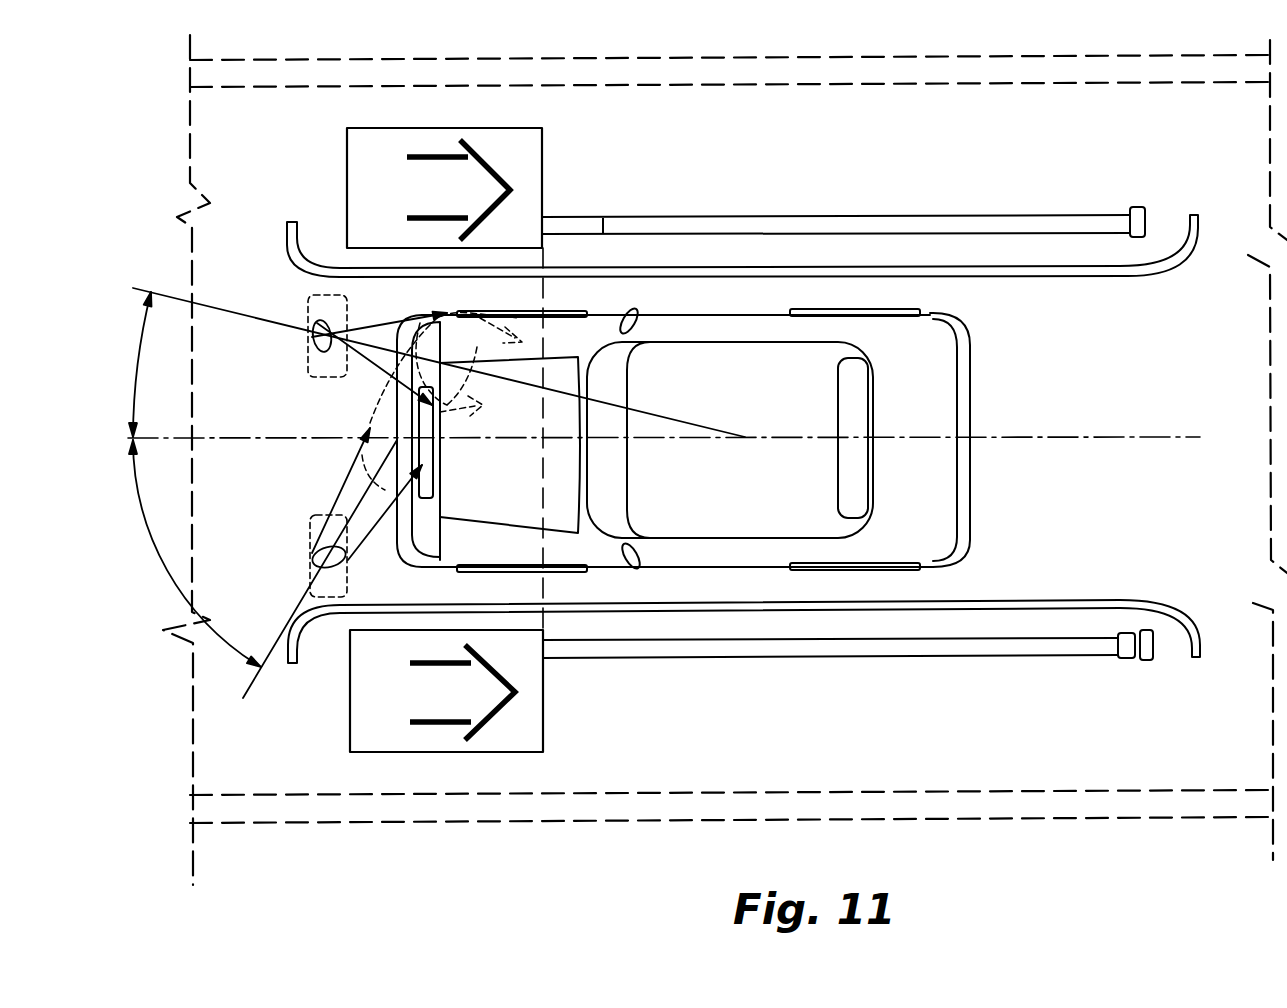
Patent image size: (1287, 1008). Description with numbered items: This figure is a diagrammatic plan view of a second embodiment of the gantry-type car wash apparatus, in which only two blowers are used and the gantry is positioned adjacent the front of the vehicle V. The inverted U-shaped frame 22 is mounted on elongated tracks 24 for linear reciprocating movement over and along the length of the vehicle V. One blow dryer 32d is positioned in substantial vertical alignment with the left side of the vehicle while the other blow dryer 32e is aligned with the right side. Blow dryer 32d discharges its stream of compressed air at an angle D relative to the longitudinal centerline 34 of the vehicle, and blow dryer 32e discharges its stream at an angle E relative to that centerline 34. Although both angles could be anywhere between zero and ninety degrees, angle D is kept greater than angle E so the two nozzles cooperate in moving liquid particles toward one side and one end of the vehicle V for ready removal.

The inverted U-shaped frame 22 is at (527, 677).
The elongated tracks 24 is at (837, 223).
The blow dryer 32d is at (320, 598).
The blow dryer 32e is at (308, 297).
The centerline of wash bay 34 is at (208, 442).
The vehicle V is at (923, 403).
The angle E is at (434, 362).
The angle D is at (263, 569).